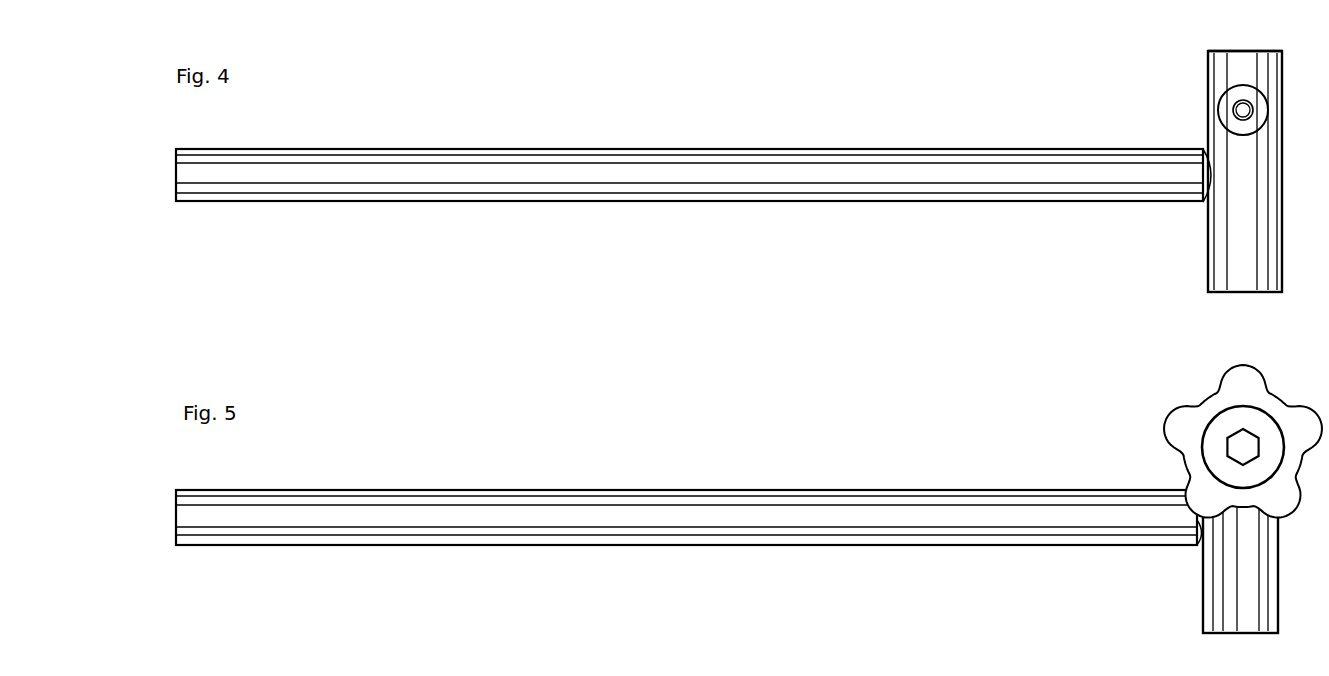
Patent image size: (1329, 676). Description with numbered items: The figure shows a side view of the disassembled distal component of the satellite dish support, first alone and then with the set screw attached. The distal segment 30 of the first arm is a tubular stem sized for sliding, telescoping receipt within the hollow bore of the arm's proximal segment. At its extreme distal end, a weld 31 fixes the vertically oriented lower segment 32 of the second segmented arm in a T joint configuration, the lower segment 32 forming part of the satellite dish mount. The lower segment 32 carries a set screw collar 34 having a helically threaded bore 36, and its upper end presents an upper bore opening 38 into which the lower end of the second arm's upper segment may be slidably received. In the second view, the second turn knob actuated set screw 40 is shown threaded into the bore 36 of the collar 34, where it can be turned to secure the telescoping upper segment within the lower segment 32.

In FIG. 4, the distal segment 30 is at (620, 167).
In FIG. 5, the distal segment 30 is at (435, 510).
In FIG. 4, the weld 31 is at (1207, 174).
In FIG. 4, the lower segment 32 is at (1267, 209).
In FIG. 5, the lower segment 32 is at (1223, 585).
In FIG. 4, the set screw collar 34 is at (1223, 113).
In FIG. 4, the helically threaded bore 36 is at (1247, 108).
In FIG. 4, the upper bore opening 38 is at (1238, 50).
In FIG. 5, the second turn knob actuated set screw 40 is at (1174, 429).